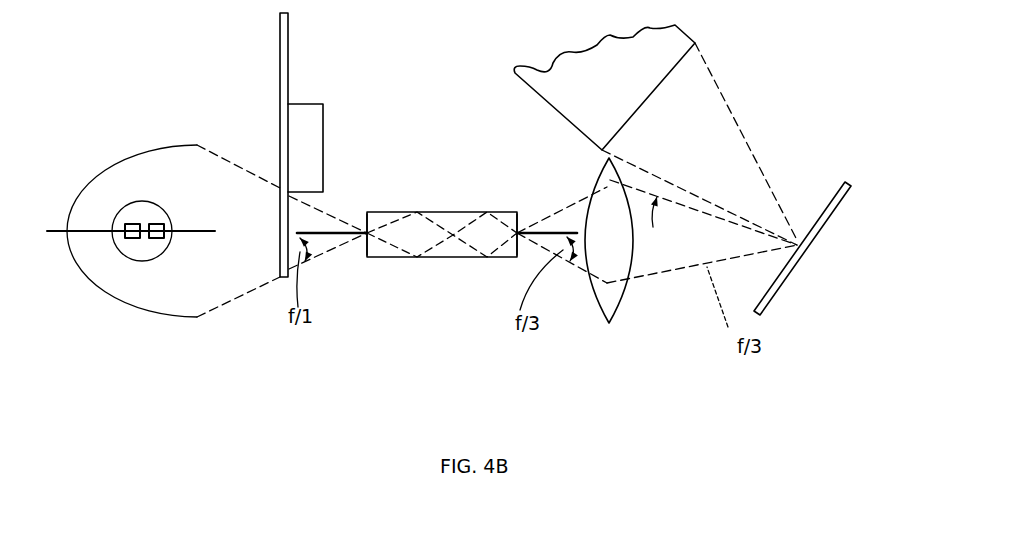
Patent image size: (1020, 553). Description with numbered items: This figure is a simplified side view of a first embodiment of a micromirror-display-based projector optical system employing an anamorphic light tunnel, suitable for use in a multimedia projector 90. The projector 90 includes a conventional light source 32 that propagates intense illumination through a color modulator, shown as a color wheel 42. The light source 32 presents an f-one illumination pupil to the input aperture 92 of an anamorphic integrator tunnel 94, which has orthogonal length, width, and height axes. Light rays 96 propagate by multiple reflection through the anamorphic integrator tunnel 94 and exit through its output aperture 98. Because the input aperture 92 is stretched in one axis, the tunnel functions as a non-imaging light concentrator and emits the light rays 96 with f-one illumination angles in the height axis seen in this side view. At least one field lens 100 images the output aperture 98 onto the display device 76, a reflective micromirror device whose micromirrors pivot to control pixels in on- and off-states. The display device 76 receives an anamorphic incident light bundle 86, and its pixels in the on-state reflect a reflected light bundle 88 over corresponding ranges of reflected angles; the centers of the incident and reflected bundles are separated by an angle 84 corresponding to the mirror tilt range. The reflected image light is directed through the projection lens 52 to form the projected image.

The light source 32 is at (150, 120).
The color wheel 42 is at (298, 82).
The projection lens 52 is at (547, 88).
The display device 76 is at (828, 200).
The angle 84 is at (662, 175).
The anamorphic incident light bundle 86 is at (675, 268).
The reflected light bundle 88 is at (718, 95).
The multimedia projector 90 is at (190, 378).
The input aperture 92 is at (367, 219).
The anamorphic integrator tunnel 94 is at (443, 212).
The light rays 96 is at (238, 308).
The output aperture 98 is at (537, 210).
The field lens 100 is at (620, 244).